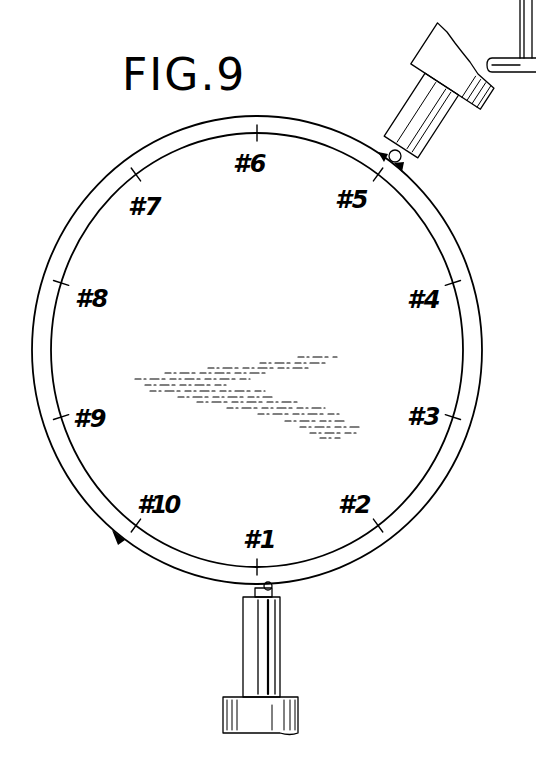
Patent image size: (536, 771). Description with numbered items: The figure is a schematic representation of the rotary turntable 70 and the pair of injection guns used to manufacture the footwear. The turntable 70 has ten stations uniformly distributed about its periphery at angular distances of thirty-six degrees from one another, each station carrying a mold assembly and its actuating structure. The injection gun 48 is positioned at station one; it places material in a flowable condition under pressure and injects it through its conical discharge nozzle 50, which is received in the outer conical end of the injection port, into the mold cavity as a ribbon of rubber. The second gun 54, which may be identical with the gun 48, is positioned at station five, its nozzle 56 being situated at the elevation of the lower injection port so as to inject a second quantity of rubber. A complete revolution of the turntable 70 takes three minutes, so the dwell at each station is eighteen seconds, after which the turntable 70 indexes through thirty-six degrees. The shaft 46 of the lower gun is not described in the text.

The rotary turntable 70 is at (256, 341).
The second gun 54 is at (416, 75).
The nozzle 56 is at (403, 162).
The gun 48 is at (278, 658).
The probe shaft 46 is at (253, 636).
The conical discharge nozzle 50 is at (258, 586).